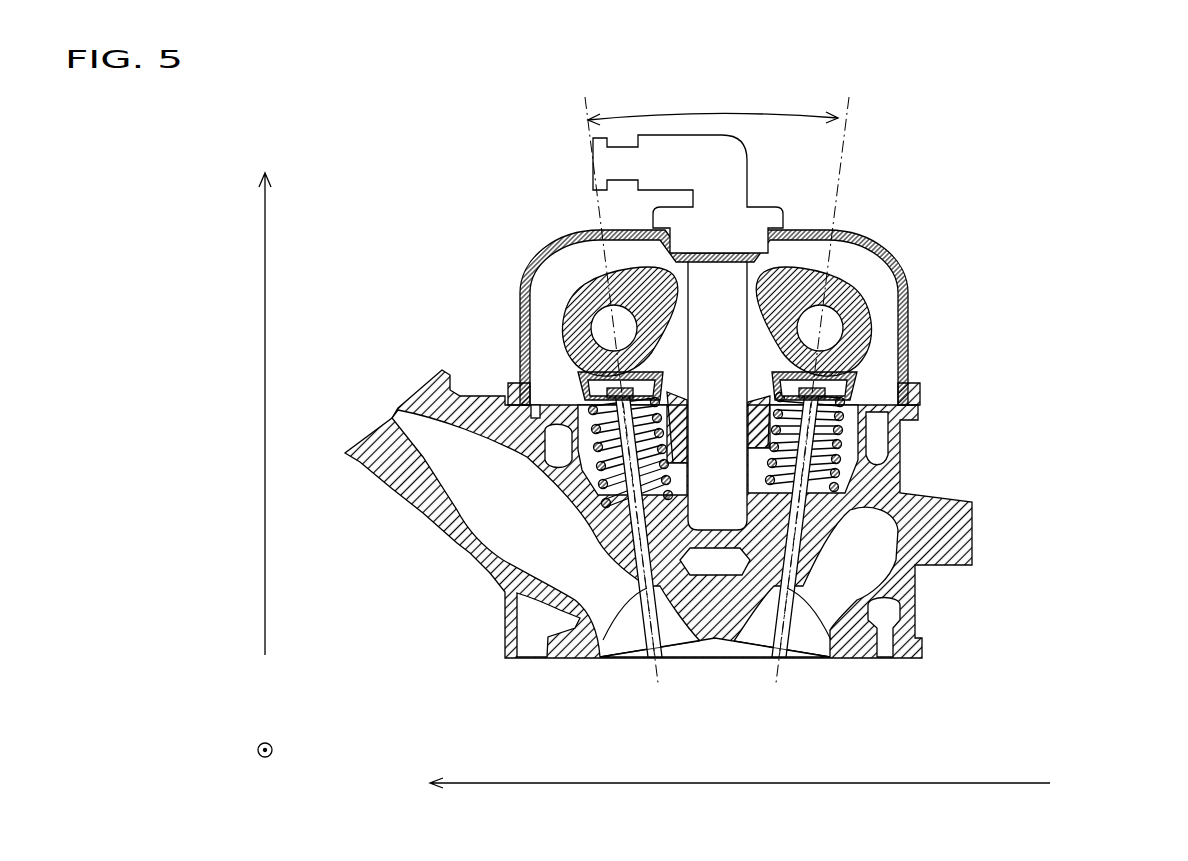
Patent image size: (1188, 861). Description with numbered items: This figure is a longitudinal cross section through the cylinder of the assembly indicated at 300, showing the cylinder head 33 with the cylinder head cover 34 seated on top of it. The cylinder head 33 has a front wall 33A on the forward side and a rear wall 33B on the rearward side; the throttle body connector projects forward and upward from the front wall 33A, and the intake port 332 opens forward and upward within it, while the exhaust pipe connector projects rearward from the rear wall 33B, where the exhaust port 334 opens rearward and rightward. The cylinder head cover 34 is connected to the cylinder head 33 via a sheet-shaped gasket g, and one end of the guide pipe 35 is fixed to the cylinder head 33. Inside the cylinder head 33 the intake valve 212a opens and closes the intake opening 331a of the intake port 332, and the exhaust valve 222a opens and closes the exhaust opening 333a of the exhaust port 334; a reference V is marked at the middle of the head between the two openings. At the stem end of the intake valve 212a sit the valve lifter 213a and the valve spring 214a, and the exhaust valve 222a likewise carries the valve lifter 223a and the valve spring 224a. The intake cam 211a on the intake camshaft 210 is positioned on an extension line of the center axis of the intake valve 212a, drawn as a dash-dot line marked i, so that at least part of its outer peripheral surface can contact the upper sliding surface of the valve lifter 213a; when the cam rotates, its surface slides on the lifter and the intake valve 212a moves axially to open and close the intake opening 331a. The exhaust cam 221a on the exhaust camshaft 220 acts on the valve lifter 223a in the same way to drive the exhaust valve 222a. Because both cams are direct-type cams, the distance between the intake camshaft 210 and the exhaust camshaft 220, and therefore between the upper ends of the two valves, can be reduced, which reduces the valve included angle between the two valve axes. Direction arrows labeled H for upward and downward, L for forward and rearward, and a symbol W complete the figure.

The engine 300 is at (921, 127).
The cylinder head 33 is at (975, 500).
The front wall 33A is at (505, 622).
The rear wall 33B is at (920, 625).
The cylinder head cover 34 is at (845, 228).
The guide pipe 35 is at (728, 277).
The intake camshaft 210 is at (568, 305).
The intake cam 211a is at (610, 282).
The intake valve 212a is at (578, 655).
The valve lifter 213a is at (598, 372).
The valve spring 214a is at (583, 478).
The exhaust camshaft 220 is at (862, 305).
The exhaust cam 221a is at (822, 282).
The exhaust valve 222a is at (858, 655).
The valve lifter 223a is at (840, 372).
The valve spring 224a is at (845, 472).
The intake opening 331a is at (645, 664).
The intake port 332 is at (413, 427).
The exhaust opening 333a is at (773, 664).
The exhaust port 334 is at (885, 548).
The gasket g is at (510, 398).
The valve axis intersection i is at (717, 393).
The combustion chamber V is at (722, 652).
The height direction H is at (280, 273).
The longitudinal direction L is at (858, 783).
The width direction W is at (258, 759).